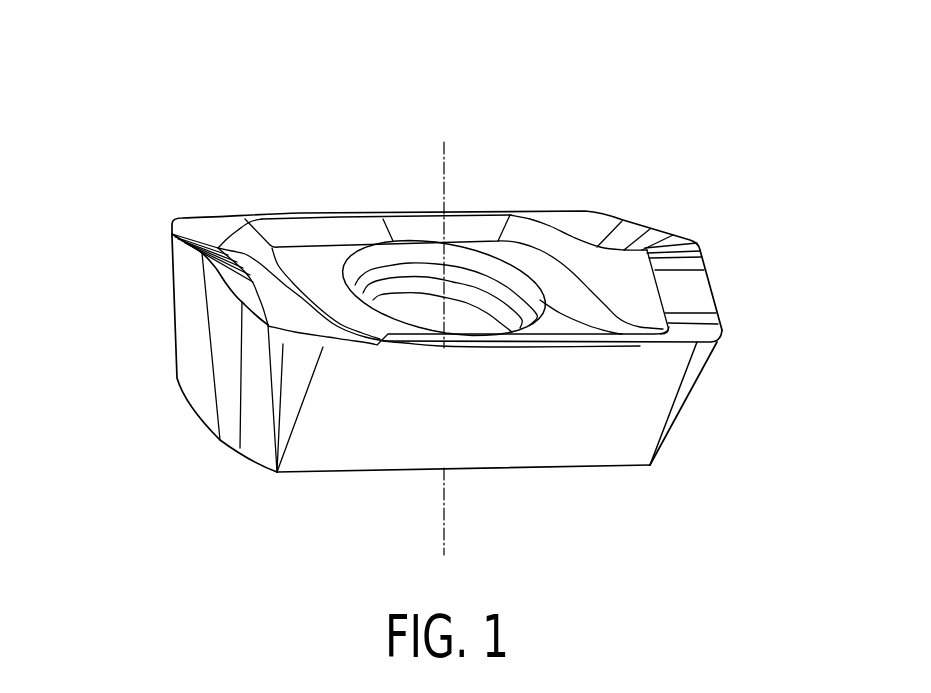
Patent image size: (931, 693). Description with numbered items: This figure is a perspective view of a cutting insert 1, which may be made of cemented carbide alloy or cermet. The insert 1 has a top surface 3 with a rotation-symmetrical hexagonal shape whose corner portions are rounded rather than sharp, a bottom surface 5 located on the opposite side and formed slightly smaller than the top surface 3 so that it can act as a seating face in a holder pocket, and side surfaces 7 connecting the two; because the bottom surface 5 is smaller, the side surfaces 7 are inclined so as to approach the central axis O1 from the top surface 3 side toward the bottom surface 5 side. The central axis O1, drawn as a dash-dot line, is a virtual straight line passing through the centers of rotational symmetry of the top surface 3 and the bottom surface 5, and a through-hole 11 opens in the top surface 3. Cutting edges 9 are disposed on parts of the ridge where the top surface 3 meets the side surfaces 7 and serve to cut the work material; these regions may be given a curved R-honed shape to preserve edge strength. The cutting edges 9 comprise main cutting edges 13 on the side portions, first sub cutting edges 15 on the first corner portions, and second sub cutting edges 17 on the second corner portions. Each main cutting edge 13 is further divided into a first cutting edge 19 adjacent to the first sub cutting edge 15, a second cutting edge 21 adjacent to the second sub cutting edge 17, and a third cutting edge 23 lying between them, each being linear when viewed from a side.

The cutting insert 1 is at (243, 131).
The top surface 3 is at (325, 262).
The bottom surface 5 is at (588, 467).
The side surfaces 7 is at (690, 395).
The cutting edges 9 is at (433, 341).
The through-hole 11 is at (507, 280).
The main cutting edges 13 is at (438, 292).
The first sub cutting edges 15 is at (172, 236).
The second sub cutting edges 17 is at (587, 209).
The first cutting edge 19 is at (673, 232).
The second cutting edge 21 is at (620, 221).
The third cutting edge 23 is at (643, 228).
The central axis O1 is at (445, 337).